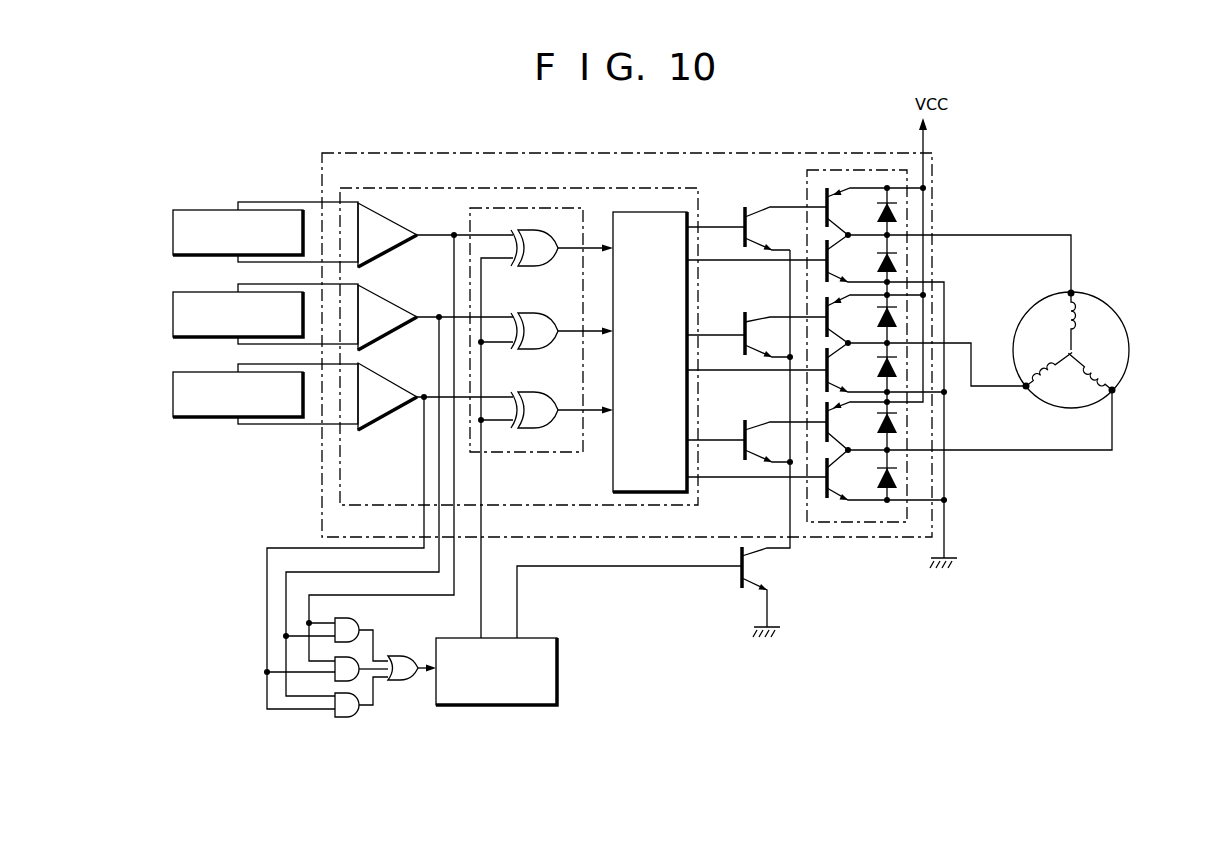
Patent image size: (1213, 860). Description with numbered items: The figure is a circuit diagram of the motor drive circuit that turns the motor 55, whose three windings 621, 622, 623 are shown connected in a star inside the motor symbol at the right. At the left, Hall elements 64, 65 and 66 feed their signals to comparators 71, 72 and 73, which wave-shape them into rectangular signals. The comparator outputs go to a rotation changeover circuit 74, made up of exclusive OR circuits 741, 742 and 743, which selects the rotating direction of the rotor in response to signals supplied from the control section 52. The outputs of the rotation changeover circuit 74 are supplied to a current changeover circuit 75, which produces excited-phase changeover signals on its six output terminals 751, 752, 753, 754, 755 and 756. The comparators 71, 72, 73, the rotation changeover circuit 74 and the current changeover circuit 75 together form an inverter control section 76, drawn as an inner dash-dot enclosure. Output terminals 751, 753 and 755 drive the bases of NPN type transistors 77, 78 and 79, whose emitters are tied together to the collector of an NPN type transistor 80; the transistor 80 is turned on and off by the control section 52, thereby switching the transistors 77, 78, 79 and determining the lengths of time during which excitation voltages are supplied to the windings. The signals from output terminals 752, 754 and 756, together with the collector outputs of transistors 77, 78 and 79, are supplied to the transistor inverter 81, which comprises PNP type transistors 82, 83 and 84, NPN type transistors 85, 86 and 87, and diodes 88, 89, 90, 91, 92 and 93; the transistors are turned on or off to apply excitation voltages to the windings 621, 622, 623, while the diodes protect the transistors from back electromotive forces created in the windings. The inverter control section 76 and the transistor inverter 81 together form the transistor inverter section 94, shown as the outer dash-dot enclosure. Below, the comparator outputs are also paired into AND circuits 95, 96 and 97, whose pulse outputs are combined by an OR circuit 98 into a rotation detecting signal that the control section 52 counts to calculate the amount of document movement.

The control section 52 is at (530, 706).
The motor 55 is at (1096, 342).
The Hall element 64 is at (173, 226).
The Hall element 65 is at (173, 308).
The Hall element 66 is at (173, 390).
The comparator 71 is at (400, 224).
The comparator 72 is at (403, 302).
The comparator 73 is at (382, 432).
The rotation changeover circuit 74 is at (504, 452).
The exclusive OR circuit 741 is at (530, 268).
The exclusive OR circuit 742 is at (538, 350).
The exclusive OR circuit 743 is at (532, 428).
The current changeover circuit 75 is at (613, 472).
The output terminal 751 is at (700, 227).
The output terminal 752 is at (700, 261).
The output terminal 753 is at (700, 335).
The output terminal 754 is at (700, 370).
The output terminal 755 is at (700, 440).
The output terminal 756 is at (700, 477).
The inverter control section 76 is at (600, 188).
The NPN type transistor 77 is at (756, 210).
The NPN type transistor 78 is at (752, 318).
The NPN type transistor 79 is at (752, 424).
The NPN type transistor 80 is at (756, 594).
The transistor inverter 81 is at (840, 170).
The PNP type transistor 82 is at (842, 200).
The PNP type transistor 83 is at (838, 331).
The PNP type transistor 84 is at (838, 438).
The NPN type transistor 85 is at (838, 275).
The NPN type transistor 86 is at (838, 385).
The NPN type transistor 87 is at (838, 495).
The diode 88 is at (900, 218).
The diode 89 is at (900, 268).
The diode 90 is at (900, 320).
The diode 91 is at (900, 378).
The diode 92 is at (900, 428).
The diode 93 is at (900, 482).
The transistor inverter section 94 is at (543, 153).
The AND circuit 95 is at (358, 624).
The AND circuit 96 is at (362, 658).
The AND circuit 97 is at (342, 717).
The OR circuit 98 is at (400, 681).
The winding 621 is at (1080, 320).
The winding 622 is at (1108, 368).
The winding 623 is at (1040, 382).